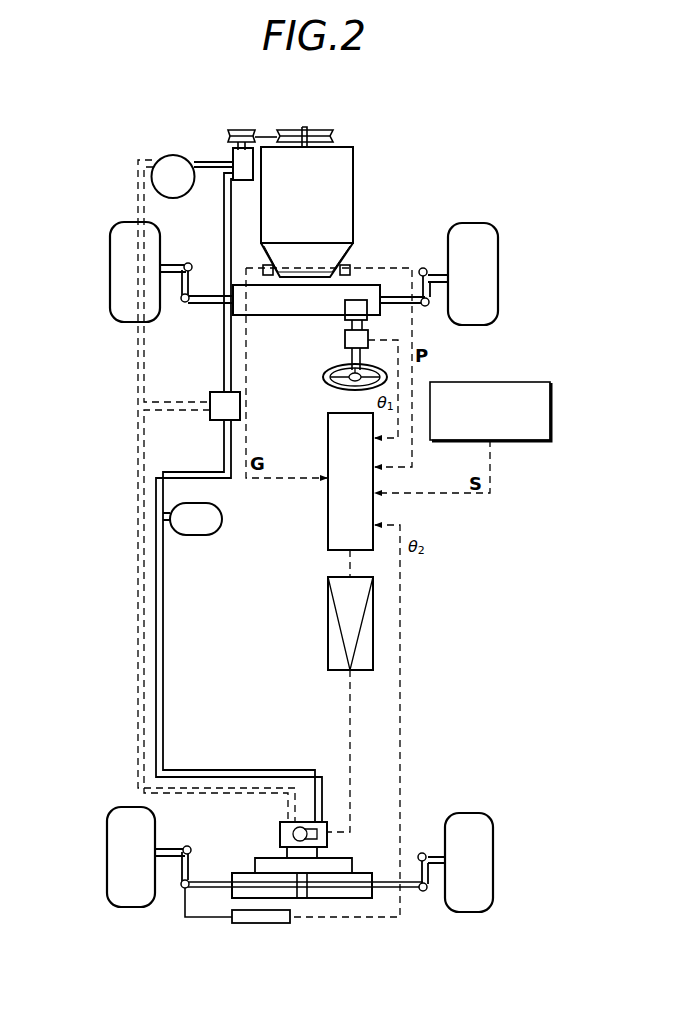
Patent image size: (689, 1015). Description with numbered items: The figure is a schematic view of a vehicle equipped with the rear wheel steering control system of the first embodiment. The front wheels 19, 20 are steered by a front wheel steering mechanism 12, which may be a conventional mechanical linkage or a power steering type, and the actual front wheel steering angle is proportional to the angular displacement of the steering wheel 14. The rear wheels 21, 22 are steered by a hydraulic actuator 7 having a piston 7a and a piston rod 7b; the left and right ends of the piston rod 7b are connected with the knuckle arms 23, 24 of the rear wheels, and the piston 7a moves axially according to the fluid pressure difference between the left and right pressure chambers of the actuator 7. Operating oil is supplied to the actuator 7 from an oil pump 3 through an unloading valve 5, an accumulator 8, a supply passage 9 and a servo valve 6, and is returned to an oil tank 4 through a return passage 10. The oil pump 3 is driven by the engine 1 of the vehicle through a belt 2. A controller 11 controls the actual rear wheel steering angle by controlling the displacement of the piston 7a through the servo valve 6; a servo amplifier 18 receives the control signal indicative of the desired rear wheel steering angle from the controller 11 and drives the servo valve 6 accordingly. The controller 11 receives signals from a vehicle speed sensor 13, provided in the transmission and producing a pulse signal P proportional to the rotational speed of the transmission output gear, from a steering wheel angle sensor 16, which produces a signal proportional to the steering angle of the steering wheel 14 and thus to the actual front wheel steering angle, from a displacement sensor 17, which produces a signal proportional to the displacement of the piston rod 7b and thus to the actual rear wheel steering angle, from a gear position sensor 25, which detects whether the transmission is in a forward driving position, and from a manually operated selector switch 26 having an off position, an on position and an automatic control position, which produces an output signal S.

The engine 1 is at (345, 147).
The belt 2 is at (262, 137).
The oil pump 3 is at (233, 158).
The oil tank 4 is at (170, 155).
The unloading valve 5 is at (213, 420).
The servo valve 6 is at (280, 830).
The hydraulic actuator 7 is at (345, 898).
The piston 7a is at (302, 898).
The piston rod 7b is at (210, 890).
The accumulator 8 is at (224, 520).
The supply passage 9 is at (165, 645).
The return passage 10 is at (137, 605).
The controller 11 is at (328, 518).
The front wheel steering mechanism 12 is at (275, 318).
The vehicle speed sensor 13 is at (345, 268).
The steering wheel 14 is at (327, 383).
The steering wheel angle sensor 16 is at (345, 318).
The displacement sensor 17 is at (260, 923).
The servo amplifier 18 is at (328, 635).
The front wheel 19 is at (500, 268).
The front wheel 20 is at (112, 250).
The rear wheel 21 is at (495, 833).
The rear wheel 22 is at (108, 832).
The knuckle arm 23 is at (173, 848).
The knuckle arm 24 is at (435, 853).
The gear position sensor 25 is at (263, 268).
The selector switch 26 is at (553, 400).